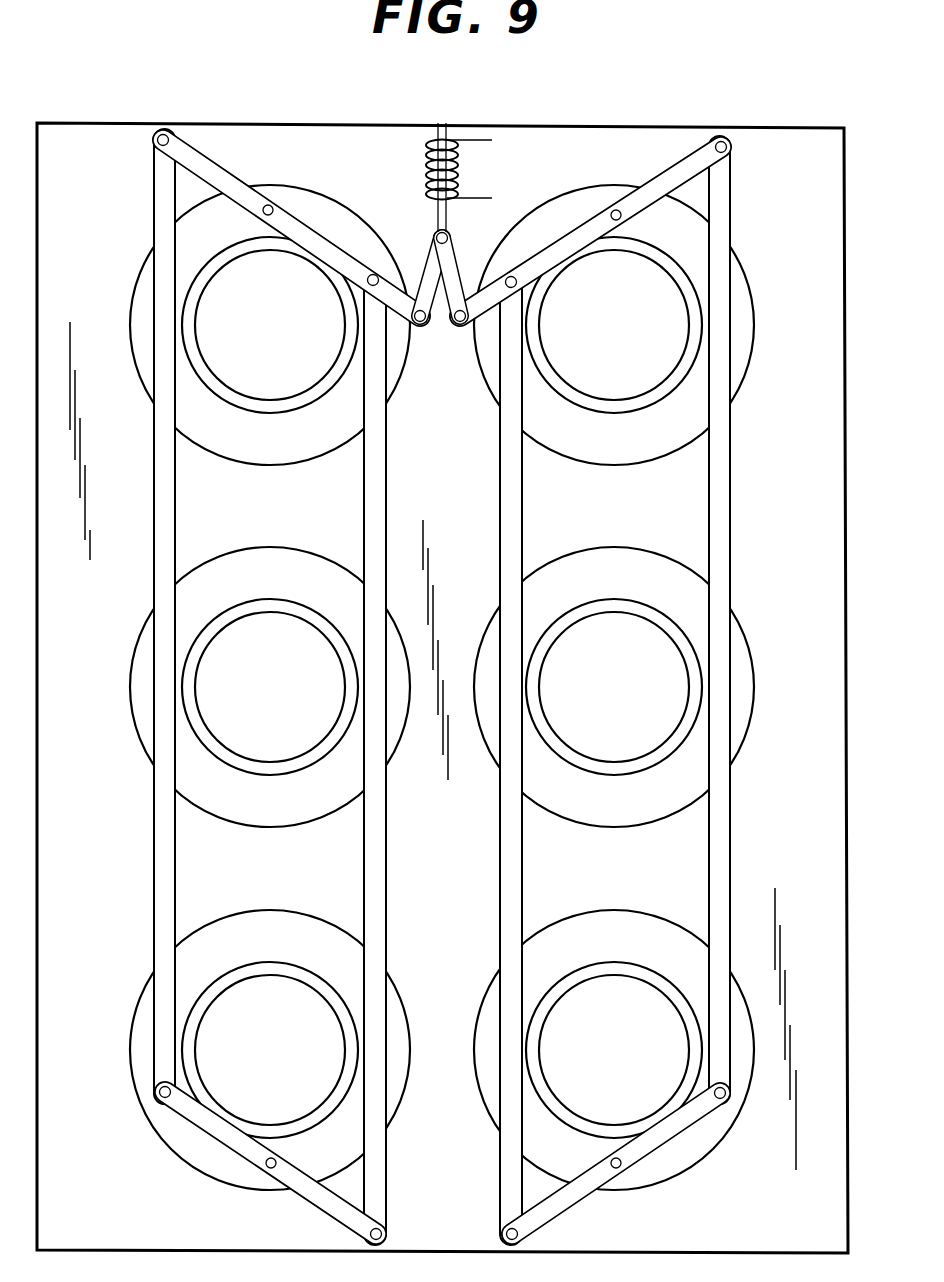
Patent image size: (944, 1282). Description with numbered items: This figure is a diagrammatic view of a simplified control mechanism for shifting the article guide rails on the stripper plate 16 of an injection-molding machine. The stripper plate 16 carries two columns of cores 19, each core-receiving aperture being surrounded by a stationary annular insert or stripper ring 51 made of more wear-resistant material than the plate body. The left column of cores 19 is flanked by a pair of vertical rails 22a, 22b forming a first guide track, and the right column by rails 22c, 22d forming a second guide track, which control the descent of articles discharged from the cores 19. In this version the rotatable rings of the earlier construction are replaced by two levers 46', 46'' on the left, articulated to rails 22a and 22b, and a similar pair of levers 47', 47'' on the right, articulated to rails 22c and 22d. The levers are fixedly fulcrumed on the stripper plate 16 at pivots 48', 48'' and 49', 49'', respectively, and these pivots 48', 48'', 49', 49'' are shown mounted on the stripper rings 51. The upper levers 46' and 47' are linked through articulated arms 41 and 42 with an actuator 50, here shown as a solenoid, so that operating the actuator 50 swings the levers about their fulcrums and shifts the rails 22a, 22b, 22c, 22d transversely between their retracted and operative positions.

The stripper plate 16 is at (790, 145).
The cores 19 is at (258, 378).
The vertical rail 22a is at (165, 888).
The vertical rail 22b is at (386, 890).
The vertical rail 22c is at (508, 845).
The vertical rail 22d is at (722, 835).
The articulated arm 41 is at (430, 280).
The articulated arm 42 is at (455, 272).
The upper left lever 46' is at (292, 203).
The lower left lever 46'' is at (271, 1163).
The upper right lever 47' is at (591, 232).
The lower right lever 47'' is at (616, 1167).
The fulcrum pivot 48' is at (288, 175).
The fulcrum pivot 48'' is at (257, 1199).
The fulcrum pivot 49' is at (629, 179).
The fulcrum pivot 49'' is at (661, 1187).
The actuator 50 is at (428, 185).
The stripper rings 51 is at (745, 325).